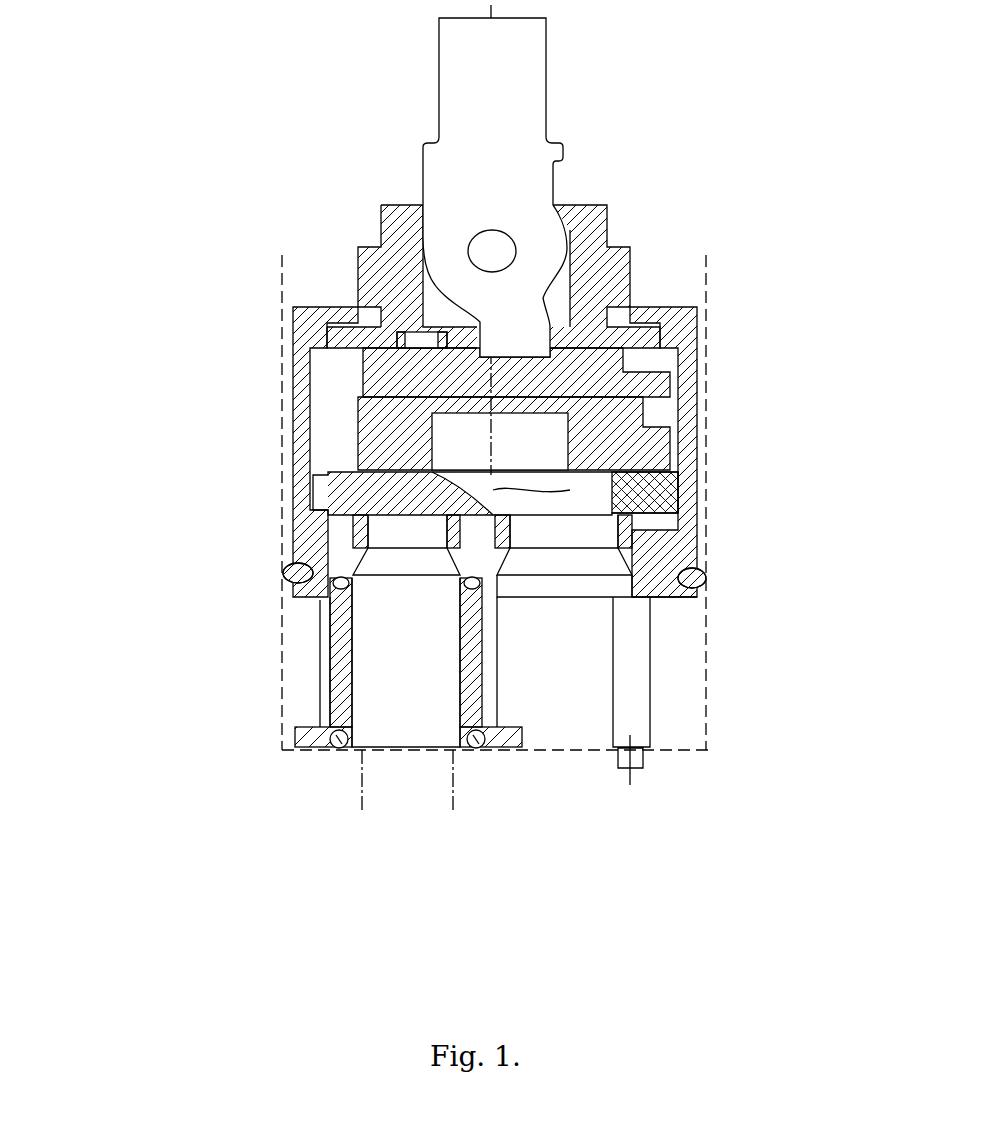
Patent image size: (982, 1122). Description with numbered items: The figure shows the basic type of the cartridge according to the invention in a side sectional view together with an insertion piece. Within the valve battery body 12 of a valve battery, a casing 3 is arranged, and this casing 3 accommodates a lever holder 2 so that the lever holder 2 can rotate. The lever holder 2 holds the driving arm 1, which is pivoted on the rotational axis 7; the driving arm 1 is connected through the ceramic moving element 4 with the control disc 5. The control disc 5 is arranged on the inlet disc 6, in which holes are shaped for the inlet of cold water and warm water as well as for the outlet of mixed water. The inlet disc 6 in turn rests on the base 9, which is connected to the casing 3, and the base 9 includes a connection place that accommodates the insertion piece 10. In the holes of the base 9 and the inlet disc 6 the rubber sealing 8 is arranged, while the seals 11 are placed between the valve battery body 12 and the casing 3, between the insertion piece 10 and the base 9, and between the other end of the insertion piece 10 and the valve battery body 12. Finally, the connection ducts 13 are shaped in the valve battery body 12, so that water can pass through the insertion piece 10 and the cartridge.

The driving arm 1 is at (443, 175).
The lever holder 2 is at (358, 245).
The casing 3 is at (292, 330).
The ceramic moving element 4 is at (358, 373).
The control disc 5 is at (358, 447).
The inlet disc 6 is at (328, 519).
The rotational axis 7 is at (515, 237).
The rubber sealing 8 is at (598, 512).
The base 9 is at (640, 555).
The insertion piece 10 is at (498, 677).
The seals 11 is at (295, 727).
The valve battery body 12 is at (293, 748).
The connection ducts 13 is at (415, 780).